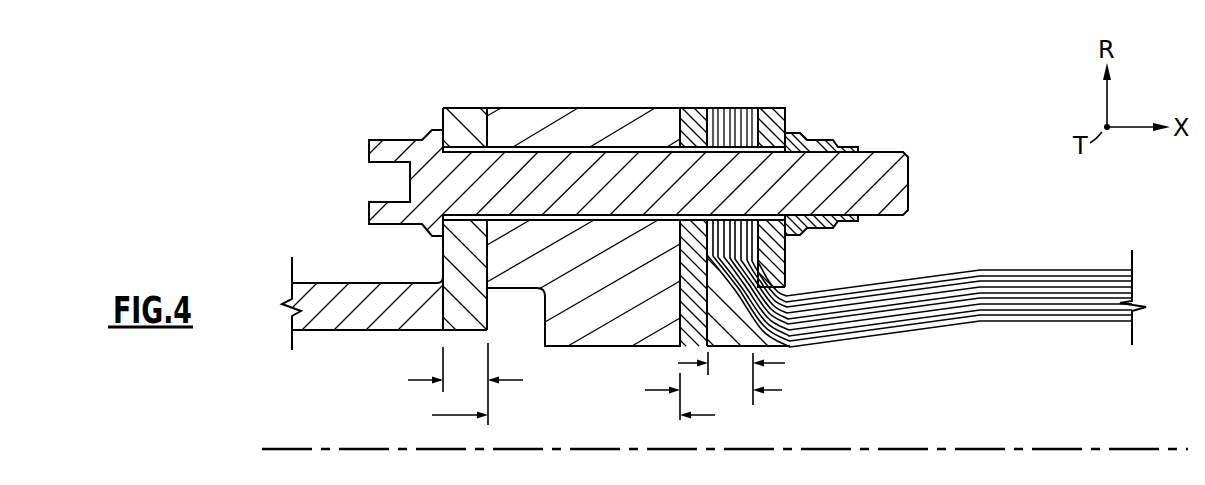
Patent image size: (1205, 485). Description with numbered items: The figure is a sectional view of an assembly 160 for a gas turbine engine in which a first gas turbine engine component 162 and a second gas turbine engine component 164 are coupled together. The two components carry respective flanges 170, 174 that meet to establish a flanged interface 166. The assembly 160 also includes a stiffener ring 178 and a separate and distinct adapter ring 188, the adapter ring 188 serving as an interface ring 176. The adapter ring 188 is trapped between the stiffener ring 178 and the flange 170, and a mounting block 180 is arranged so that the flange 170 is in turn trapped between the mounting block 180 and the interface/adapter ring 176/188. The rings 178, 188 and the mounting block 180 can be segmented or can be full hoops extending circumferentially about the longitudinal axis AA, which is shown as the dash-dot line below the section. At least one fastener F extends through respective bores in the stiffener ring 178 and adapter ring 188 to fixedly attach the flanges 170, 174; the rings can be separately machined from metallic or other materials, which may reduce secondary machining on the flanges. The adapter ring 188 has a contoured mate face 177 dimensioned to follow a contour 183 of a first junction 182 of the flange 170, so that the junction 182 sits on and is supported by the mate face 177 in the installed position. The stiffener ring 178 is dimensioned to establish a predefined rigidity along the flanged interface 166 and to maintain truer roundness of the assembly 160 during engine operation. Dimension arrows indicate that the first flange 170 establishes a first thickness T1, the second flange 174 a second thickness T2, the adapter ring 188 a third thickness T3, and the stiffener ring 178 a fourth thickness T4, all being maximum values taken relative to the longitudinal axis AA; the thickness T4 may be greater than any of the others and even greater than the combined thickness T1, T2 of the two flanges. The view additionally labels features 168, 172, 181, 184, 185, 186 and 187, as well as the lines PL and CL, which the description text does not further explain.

The assembly 160 is at (291, 117).
The first gas turbine engine component 162 is at (1078, 244).
The second gas turbine engine component 164 is at (317, 270).
The flanged interface 166 is at (466, 55).
The panel end 168 is at (1113, 270).
The first flange 170 is at (743, 108).
The plate upper surface 172 is at (363, 283).
The second flange 174 is at (467, 117).
The interface ring 176 is at (700, 97).
The contoured mate face 177 is at (784, 337).
The stiffener ring 178 is at (572, 108).
The mounting block 180 is at (797, 107).
The filler 181 is at (710, 296).
The first junction 182 is at (755, 275).
The contour 183 is at (797, 299).
The lower washer 184 is at (472, 310).
The ply layer 185 is at (786, 294).
The inclined portion 186 is at (910, 279).
The lower sleeve 187 is at (680, 322).
The adapter ring 188 is at (693, 127).
The fastener F is at (903, 152).
The parting line PL is at (992, 282).
The centerline CL is at (1034, 257).
The longitudinal axis AA is at (1147, 448).
The first thickness T1 is at (785, 363).
The second thickness T2 is at (436, 378).
The third thickness T3 is at (782, 390).
The fourth thickness T4 is at (555, 403).